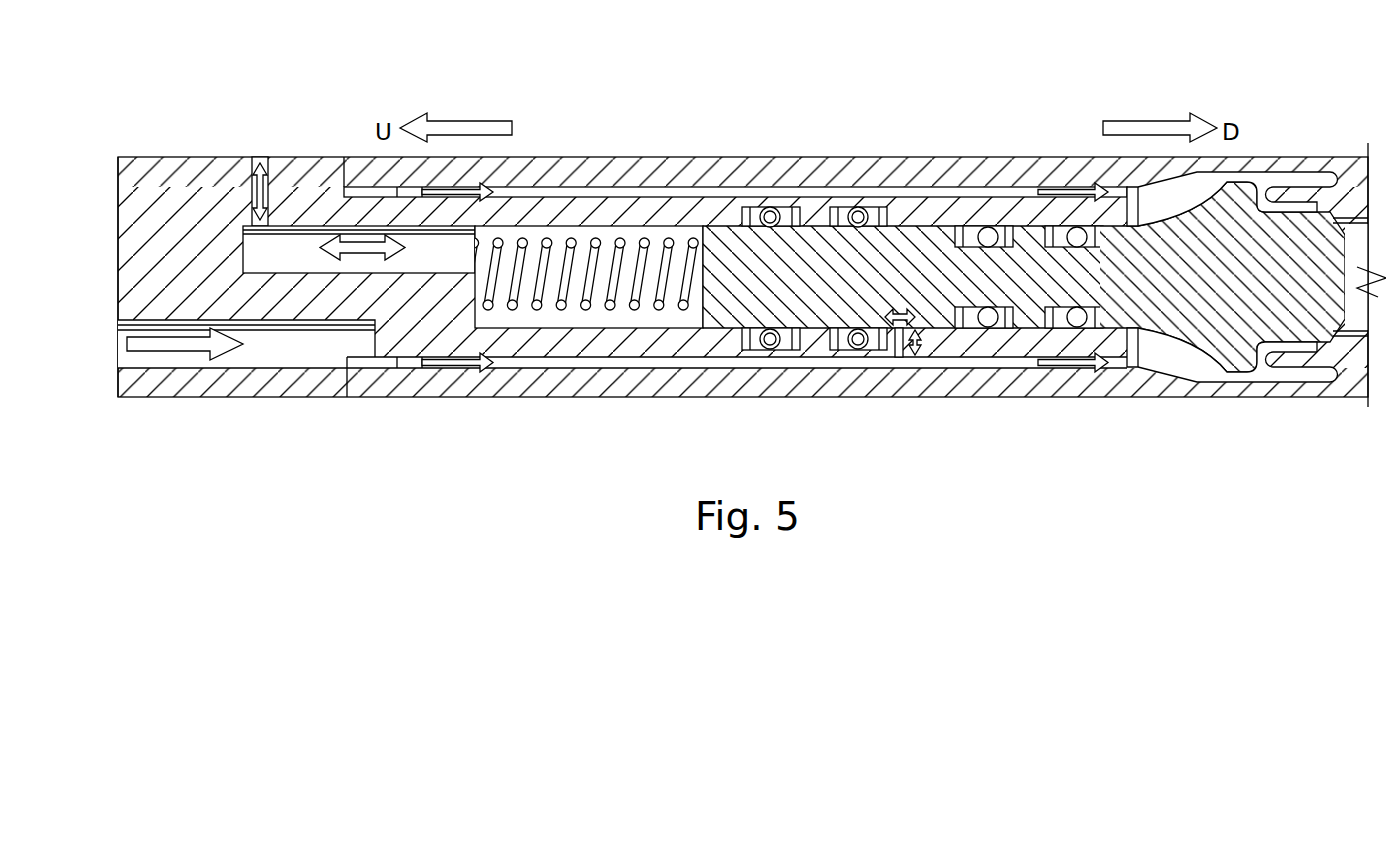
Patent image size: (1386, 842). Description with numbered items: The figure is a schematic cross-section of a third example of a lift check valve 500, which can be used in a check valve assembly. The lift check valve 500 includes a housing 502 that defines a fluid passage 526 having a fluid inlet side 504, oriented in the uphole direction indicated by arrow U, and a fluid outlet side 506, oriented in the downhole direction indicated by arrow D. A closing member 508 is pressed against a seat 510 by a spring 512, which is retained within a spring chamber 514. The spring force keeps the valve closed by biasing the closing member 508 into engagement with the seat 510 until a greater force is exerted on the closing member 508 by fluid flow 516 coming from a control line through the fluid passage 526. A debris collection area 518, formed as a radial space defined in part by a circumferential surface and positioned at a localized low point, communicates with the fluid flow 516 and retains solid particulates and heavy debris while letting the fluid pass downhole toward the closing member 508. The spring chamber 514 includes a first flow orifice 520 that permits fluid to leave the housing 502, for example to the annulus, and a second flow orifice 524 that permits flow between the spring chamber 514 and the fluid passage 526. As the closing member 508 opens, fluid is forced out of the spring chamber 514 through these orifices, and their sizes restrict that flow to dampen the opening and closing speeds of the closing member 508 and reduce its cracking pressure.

The lift check valve 500 is at (966, 92).
The housing 502 is at (731, 157).
The fluid inlet side 504 is at (118, 193).
The fluid outlet side 506 is at (1358, 307).
The closing member 508 is at (1235, 337).
The seat 510 is at (1353, 157).
The spring 512 is at (657, 308).
The spring chamber 514 is at (563, 318).
The fluid flow 516 is at (123, 357).
The debris collection area 518 is at (1312, 157).
The first flow orifice 520 is at (257, 157).
The second flow orifice 524 is at (911, 368).
The fluid passage 526 is at (823, 368).